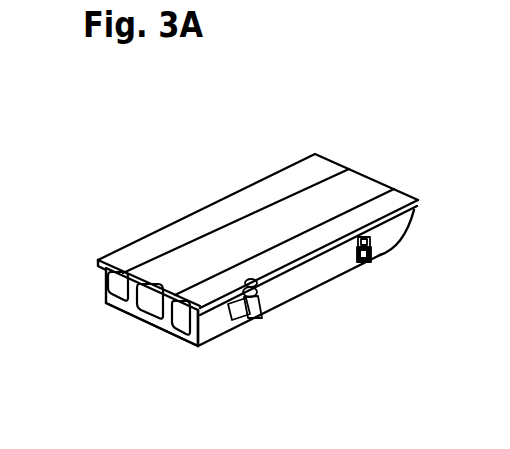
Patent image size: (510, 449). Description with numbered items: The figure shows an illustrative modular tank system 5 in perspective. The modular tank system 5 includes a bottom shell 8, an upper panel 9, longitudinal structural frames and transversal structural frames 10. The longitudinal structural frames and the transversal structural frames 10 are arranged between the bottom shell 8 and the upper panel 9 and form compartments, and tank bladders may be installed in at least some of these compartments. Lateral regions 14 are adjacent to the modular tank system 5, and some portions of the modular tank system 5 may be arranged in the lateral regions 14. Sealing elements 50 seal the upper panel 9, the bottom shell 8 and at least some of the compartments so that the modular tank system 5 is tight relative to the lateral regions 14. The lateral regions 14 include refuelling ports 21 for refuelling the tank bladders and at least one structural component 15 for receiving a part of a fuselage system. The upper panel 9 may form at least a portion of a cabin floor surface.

The modular tank system 5 is at (175, 191).
The upper panel 9 is at (353, 183).
The lateral regions 14 is at (309, 274).
The transversal structural frames 10 is at (153, 306).
The sealing elements 50 is at (105, 300).
The bottom shell 8 is at (198, 348).
The refuelling ports 21 is at (254, 319).
The structural component 15 is at (372, 253).